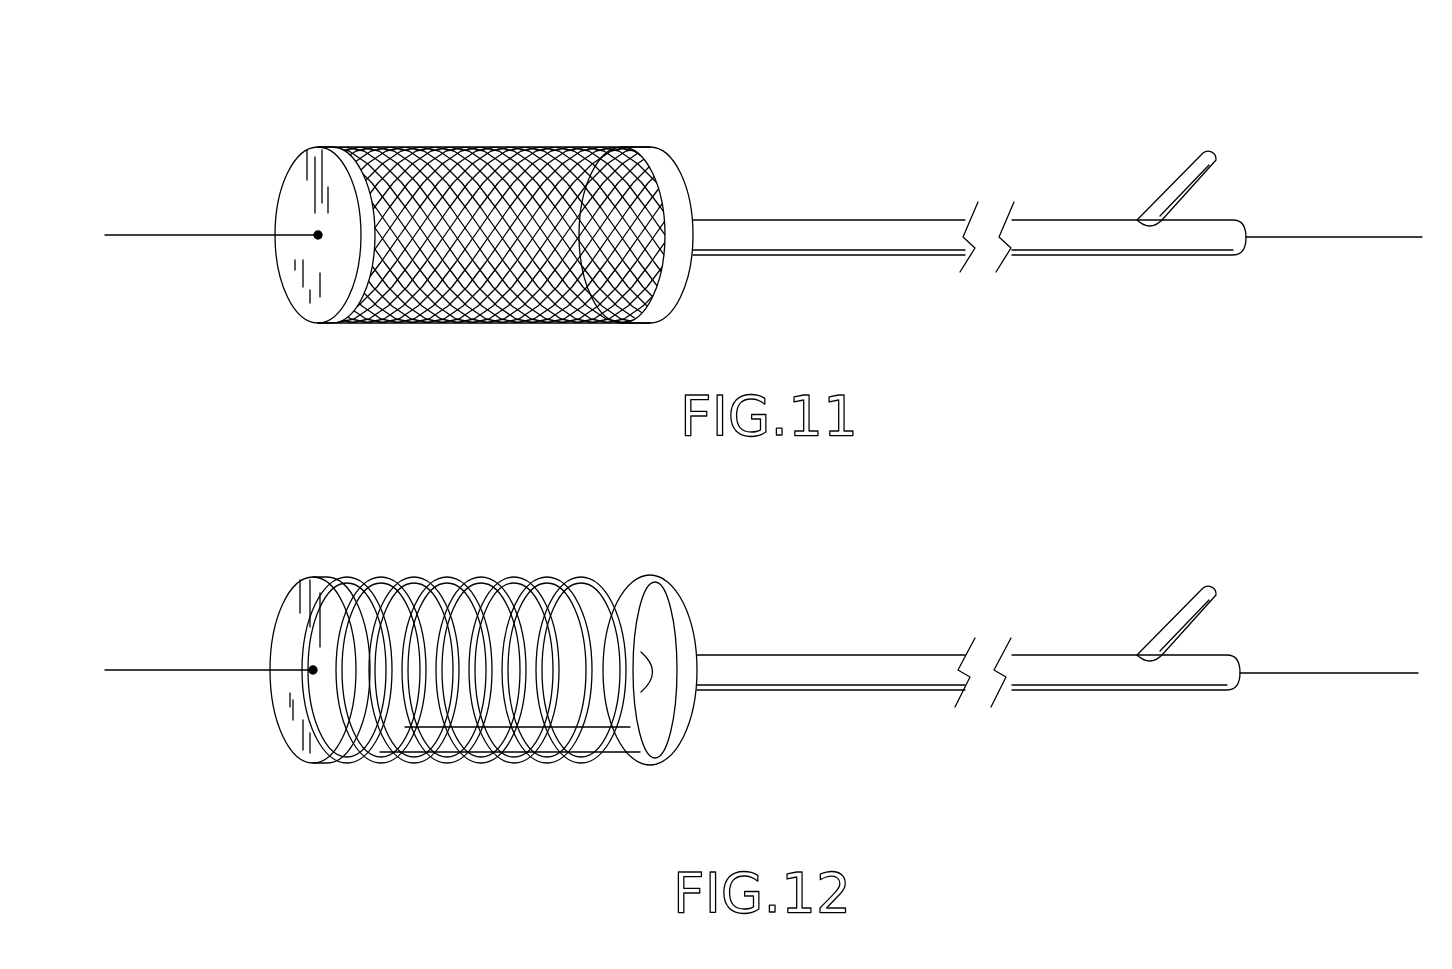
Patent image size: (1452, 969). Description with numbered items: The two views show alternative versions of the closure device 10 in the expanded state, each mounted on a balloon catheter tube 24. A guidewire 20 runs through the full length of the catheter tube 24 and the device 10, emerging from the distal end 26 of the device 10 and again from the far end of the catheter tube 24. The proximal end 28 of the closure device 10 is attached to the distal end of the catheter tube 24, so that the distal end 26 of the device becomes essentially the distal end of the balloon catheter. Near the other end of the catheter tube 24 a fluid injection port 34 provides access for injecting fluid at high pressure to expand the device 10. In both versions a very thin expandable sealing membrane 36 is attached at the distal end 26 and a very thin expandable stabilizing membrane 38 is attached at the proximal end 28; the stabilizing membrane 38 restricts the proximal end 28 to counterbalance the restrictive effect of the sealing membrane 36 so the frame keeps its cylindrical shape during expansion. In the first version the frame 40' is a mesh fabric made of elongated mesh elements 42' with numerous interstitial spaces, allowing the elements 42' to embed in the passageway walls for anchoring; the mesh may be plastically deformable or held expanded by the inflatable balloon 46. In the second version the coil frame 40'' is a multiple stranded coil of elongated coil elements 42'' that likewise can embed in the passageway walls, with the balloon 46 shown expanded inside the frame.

In FIG. 11, the closure device 10 is at (748, 172).
In FIG. 12, the closure device 10 is at (782, 620).
In FIG. 11, the guidewire 20 is at (150, 235).
In FIG. 12, the guidewire 20 is at (160, 670).
In FIG. 11, the catheter tube 24 is at (907, 242).
In FIG. 12, the catheter tube 24 is at (903, 677).
In FIG. 11, the distal end 26 is at (366, 150).
In FIG. 12, the distal end 26 is at (350, 590).
In FIG. 11, the proximal end 28 is at (678, 182).
In FIG. 12, the proximal end 28 is at (683, 735).
In FIG. 11, the fluid injection port 34 is at (1177, 183).
In FIG. 12, the fluid injection port 34 is at (1175, 618).
In FIG. 11, the sealing membrane 36 is at (320, 273).
In FIG. 12, the sealing membrane 36 is at (320, 727).
In FIG. 11, the stabilizing membrane 38 is at (683, 290).
In FIG. 12, the stabilizing membrane 38 is at (683, 620).
In FIG. 11, the mesh frame 40' is at (502, 245).
In FIG. 12, the coil frame 40'' is at (491, 691).
In FIG. 11, the elongated mesh elements 42' is at (502, 186).
In FIG. 12, the elongated coil elements 42'' is at (464, 673).
In FIG. 12, the inflatable balloon 46 is at (557, 627).